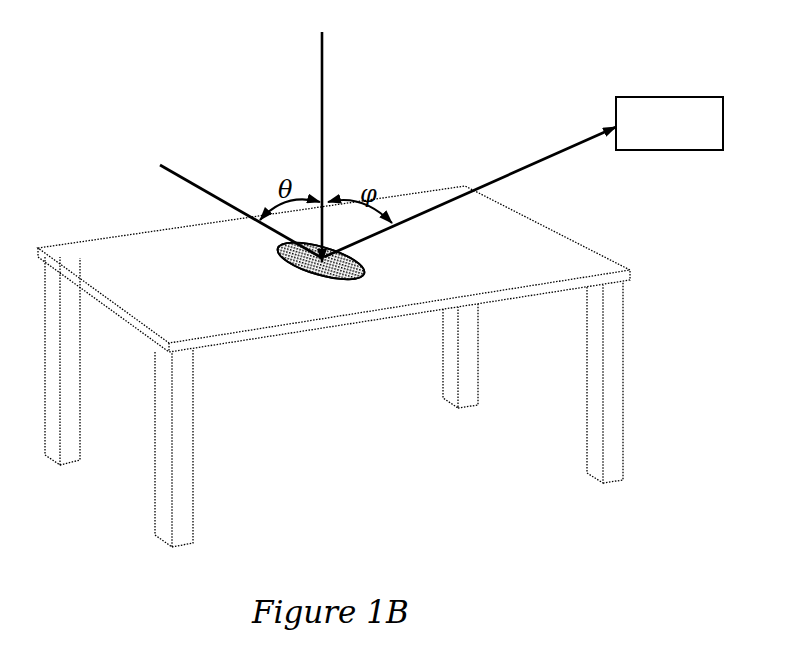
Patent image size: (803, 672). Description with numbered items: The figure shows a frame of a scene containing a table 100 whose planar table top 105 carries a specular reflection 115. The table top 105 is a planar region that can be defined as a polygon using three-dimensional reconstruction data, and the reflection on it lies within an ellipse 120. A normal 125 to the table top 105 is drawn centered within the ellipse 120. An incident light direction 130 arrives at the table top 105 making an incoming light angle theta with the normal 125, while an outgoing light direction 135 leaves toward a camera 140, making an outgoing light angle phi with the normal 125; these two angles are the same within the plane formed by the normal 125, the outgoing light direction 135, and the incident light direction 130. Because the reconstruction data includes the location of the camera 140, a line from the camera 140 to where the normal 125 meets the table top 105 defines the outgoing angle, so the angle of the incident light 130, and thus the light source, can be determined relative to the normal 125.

The table 100 is at (494, 103).
The table top 105 is at (180, 255).
The specular reflection 115 is at (282, 260).
The ellipse 120 is at (367, 274).
The normal 125 is at (323, 92).
The incident light direction 130 is at (187, 177).
The outgoing light direction 135 is at (492, 182).
The camera 140 is at (672, 95).